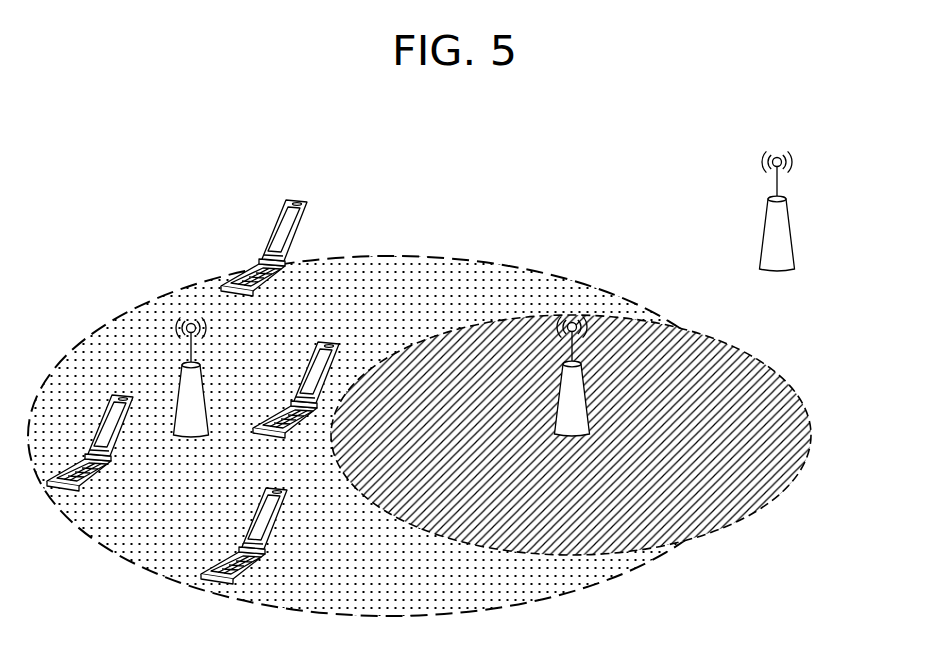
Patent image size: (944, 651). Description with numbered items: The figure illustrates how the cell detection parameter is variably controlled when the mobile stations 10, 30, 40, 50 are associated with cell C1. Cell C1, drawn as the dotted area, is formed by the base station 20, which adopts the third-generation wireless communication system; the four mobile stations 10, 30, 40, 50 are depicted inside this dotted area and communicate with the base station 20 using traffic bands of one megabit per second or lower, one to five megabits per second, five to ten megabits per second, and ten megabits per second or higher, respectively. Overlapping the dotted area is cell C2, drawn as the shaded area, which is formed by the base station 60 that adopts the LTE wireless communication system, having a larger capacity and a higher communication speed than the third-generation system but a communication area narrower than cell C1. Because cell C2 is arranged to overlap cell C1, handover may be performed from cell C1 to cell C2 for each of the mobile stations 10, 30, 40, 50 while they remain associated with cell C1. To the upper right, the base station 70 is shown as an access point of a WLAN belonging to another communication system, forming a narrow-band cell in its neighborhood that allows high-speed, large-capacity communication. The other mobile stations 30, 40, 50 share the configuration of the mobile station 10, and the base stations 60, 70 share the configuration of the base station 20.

The mobile station 10 is at (289, 505).
The base station 20 is at (199, 382).
The mobile station 30 is at (338, 357).
The mobile station 40 is at (97, 430).
The mobile station 50 is at (307, 214).
The base station 60 is at (584, 396).
The base station 70 is at (788, 213).
The cell C1 is at (418, 255).
The cell C2 is at (806, 391).